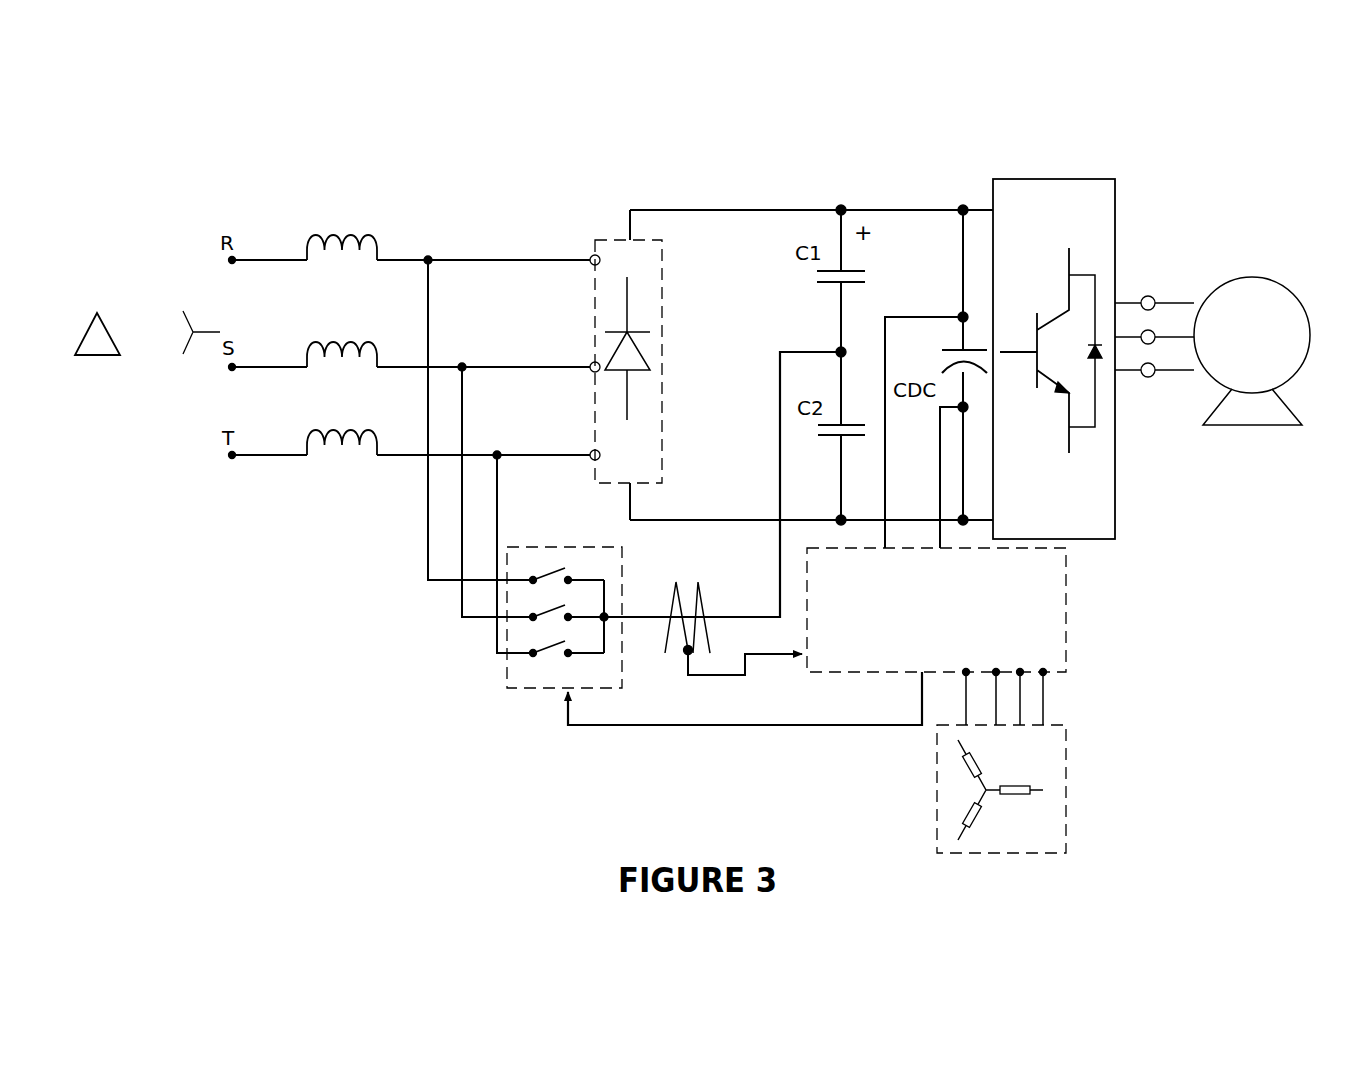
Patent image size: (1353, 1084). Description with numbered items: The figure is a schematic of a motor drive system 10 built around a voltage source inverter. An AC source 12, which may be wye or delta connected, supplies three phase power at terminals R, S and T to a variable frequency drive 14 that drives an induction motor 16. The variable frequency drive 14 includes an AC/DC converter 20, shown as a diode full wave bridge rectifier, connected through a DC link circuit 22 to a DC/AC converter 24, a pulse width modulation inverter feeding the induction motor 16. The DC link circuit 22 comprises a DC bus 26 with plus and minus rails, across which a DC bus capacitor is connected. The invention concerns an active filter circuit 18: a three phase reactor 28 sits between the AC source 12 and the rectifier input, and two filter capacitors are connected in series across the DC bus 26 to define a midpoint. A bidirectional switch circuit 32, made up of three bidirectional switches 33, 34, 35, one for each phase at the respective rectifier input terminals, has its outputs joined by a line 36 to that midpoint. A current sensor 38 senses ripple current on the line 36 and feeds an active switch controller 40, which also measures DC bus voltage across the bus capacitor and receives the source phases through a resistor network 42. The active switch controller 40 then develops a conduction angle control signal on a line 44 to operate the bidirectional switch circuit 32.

The motor drive system 10 is at (918, 164).
The AC source 12 is at (135, 318).
The variable frequency drive 14 is at (965, 199).
The induction motor 16 is at (1262, 262).
The active filter circuit 18 is at (505, 709).
The AC/DC converter 20 is at (593, 236).
The DC link circuit 22 is at (726, 207).
The DC/AC converter 24 is at (1095, 168).
The DC bus 26 is at (903, 205).
The three phase reactor 28 is at (345, 232).
The bidirectional switch circuit 32 is at (532, 647).
The bidirectional switch 33 is at (547, 558).
The bidirectional switch 34 is at (520, 628).
The bidirectional switch 35 is at (535, 668).
The line 36 is at (768, 485).
The current sensor 38 is at (708, 600).
The active switch controller 40 is at (1075, 594).
The resistor network 42 is at (1073, 774).
The line 44 is at (867, 732).